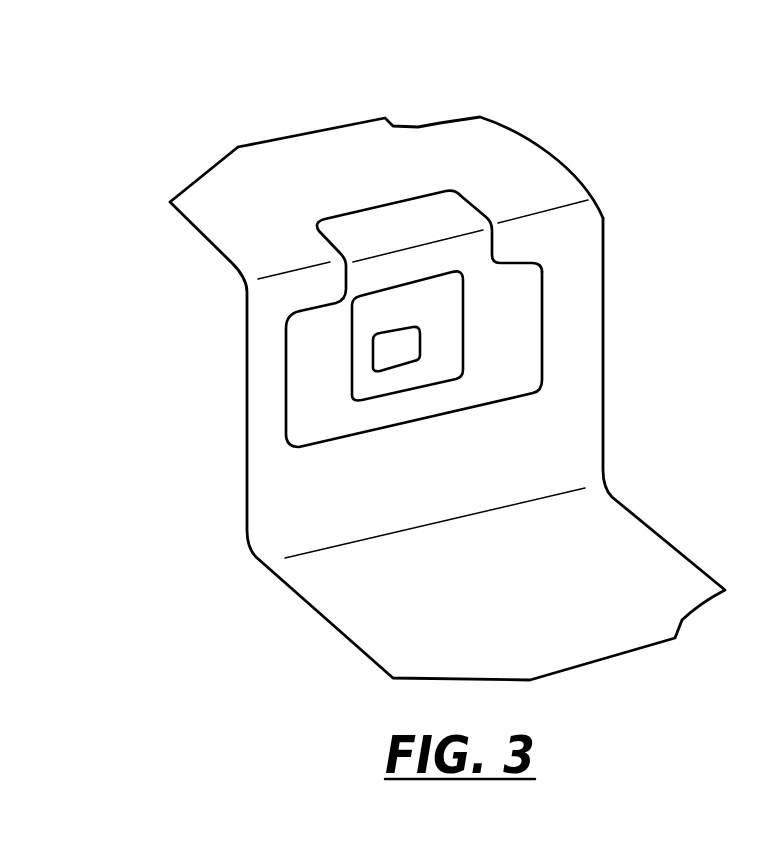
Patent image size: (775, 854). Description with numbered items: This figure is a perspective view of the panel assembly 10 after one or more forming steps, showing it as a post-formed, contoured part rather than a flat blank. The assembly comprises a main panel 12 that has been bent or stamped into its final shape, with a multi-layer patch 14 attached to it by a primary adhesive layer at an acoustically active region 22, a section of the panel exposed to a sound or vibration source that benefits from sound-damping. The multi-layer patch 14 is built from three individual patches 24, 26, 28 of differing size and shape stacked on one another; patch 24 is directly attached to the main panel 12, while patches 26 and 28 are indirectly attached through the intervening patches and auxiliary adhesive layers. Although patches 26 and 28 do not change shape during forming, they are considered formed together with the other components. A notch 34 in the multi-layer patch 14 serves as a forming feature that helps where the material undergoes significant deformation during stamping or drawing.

The panel assembly 10 is at (203, 122).
The main panel 12 is at (367, 140).
The multi-layer patch 14 is at (473, 196).
The acoustically active region 22 is at (294, 459).
The patch 24 is at (477, 252).
The patch 26 is at (451, 294).
The patch 28 is at (408, 353).
The notch 34 is at (312, 292).